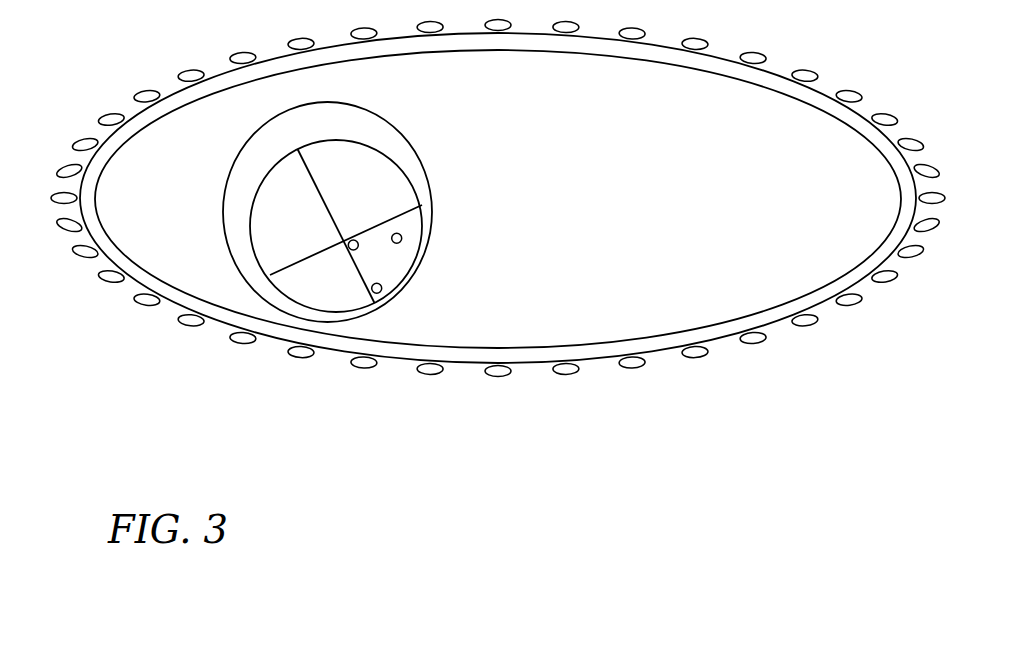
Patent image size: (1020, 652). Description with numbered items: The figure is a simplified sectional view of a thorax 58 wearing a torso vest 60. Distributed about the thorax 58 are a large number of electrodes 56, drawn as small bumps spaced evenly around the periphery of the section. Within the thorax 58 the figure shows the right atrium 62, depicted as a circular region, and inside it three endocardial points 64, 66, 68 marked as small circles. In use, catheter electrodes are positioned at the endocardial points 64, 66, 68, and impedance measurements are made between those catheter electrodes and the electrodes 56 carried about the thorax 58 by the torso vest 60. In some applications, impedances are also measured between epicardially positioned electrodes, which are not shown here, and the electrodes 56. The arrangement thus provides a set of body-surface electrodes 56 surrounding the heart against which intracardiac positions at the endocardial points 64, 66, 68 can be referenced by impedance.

The electrodes 56 is at (240, 348).
The thorax 58 is at (818, 100).
The torso vest 60 is at (320, 393).
The right atrium 62 is at (432, 205).
The endocardial point 64 is at (358, 249).
The endocardial point 66 is at (402, 241).
The endocardial point 68 is at (382, 291).